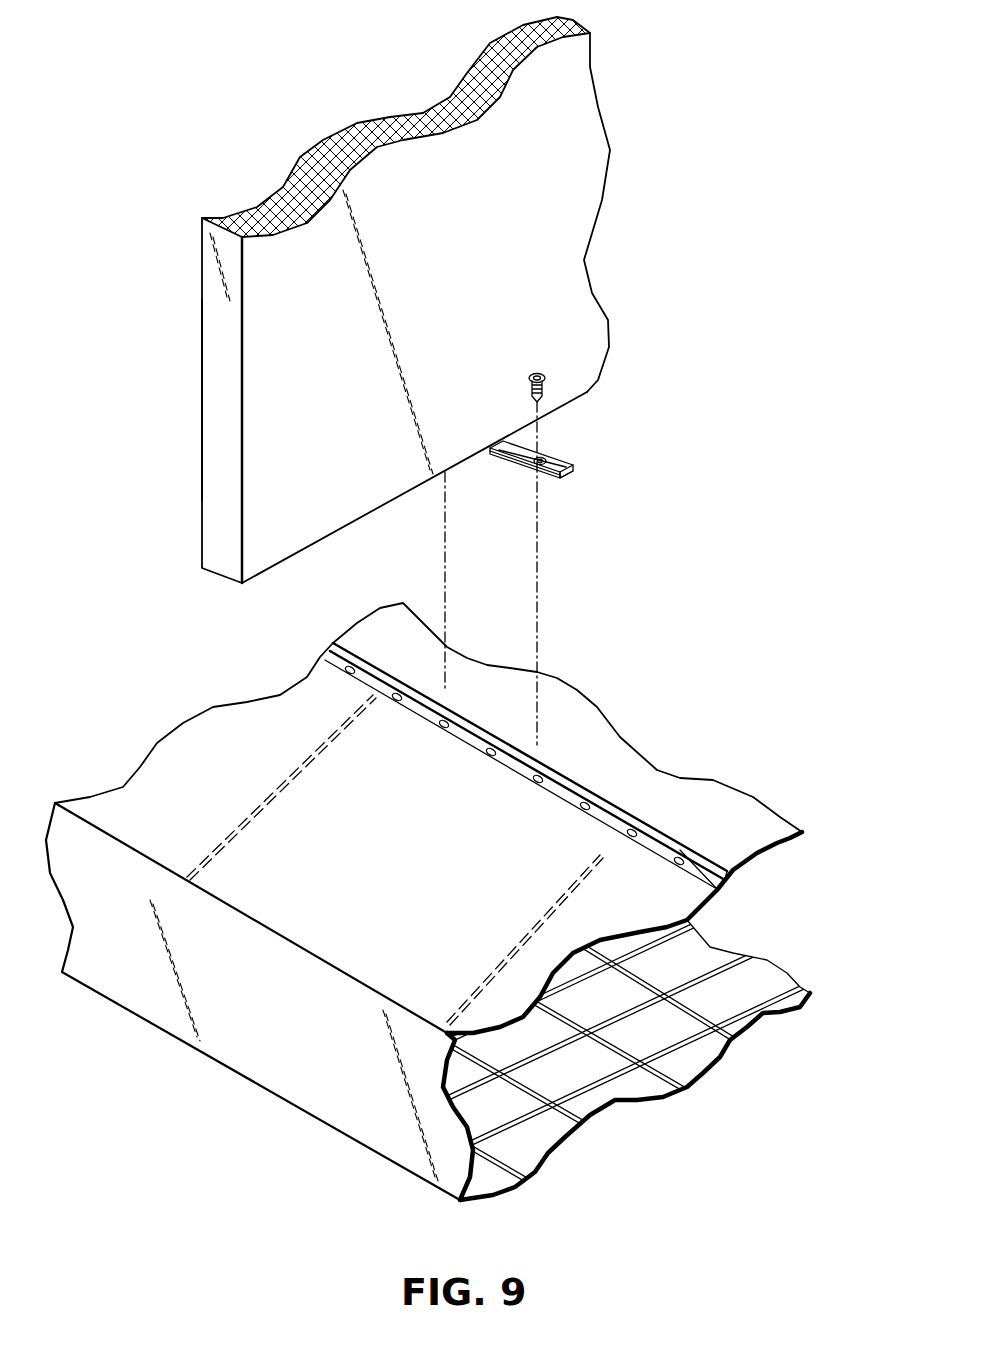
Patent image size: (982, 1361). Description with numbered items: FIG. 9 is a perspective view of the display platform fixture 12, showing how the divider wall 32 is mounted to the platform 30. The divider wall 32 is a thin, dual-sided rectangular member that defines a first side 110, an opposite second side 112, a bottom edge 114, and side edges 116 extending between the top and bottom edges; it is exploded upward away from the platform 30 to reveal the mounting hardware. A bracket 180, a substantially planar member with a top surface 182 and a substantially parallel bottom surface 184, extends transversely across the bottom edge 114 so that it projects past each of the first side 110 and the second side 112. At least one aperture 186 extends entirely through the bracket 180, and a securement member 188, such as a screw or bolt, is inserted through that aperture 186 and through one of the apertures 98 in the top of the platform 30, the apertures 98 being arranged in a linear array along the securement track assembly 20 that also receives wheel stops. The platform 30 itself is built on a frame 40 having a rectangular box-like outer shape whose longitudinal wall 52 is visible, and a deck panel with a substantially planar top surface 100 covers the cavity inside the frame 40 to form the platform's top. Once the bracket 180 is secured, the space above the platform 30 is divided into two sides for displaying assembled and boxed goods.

The platform fixture 12 is at (120, 104).
The divider wall 32 is at (552, 181).
The first side 110 is at (592, 348).
The second side 112 is at (205, 348).
The bottom edge 114 is at (288, 568).
The side edge 116 is at (215, 440).
The securement member 188 is at (536, 371).
The bracket 180 is at (562, 464).
The top surface 182 is at (553, 460).
The bottom surface 184 is at (557, 485).
The aperture 186 is at (518, 457).
The platform 30 is at (278, 1043).
The top surface 100 is at (183, 738).
The longitudinal wall 52 is at (143, 993).
The securement track assembly 20 is at (613, 810).
The aperture 98 is at (675, 862).
The frame 40 is at (698, 875).